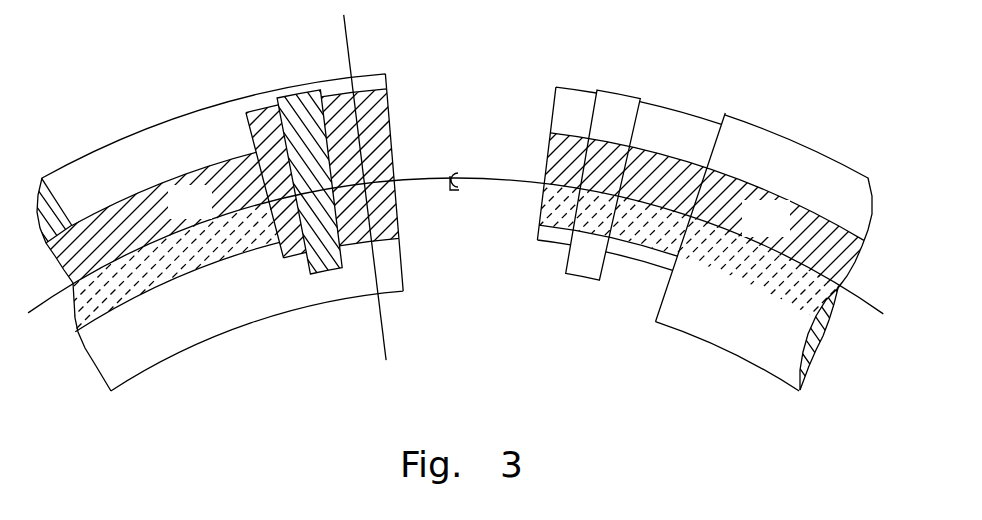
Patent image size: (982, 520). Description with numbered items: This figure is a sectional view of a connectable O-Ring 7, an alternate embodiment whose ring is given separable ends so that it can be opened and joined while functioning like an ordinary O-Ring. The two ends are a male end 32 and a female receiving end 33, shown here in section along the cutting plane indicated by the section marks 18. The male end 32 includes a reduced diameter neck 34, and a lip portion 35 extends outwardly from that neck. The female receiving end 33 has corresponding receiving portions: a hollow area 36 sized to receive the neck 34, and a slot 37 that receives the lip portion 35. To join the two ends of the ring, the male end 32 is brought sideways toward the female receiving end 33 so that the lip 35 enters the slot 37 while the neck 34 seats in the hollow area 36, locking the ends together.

The seal ring 7 is at (170, 214).
The section line 18 is at (344, 15).
The male end 32 is at (727, 351).
The female receiving end 33 is at (173, 357).
The reduced diameter neck 34 is at (640, 260).
The lip portion 35 is at (570, 275).
The hollow area 36 is at (387, 240).
The slot 37 is at (324, 273).